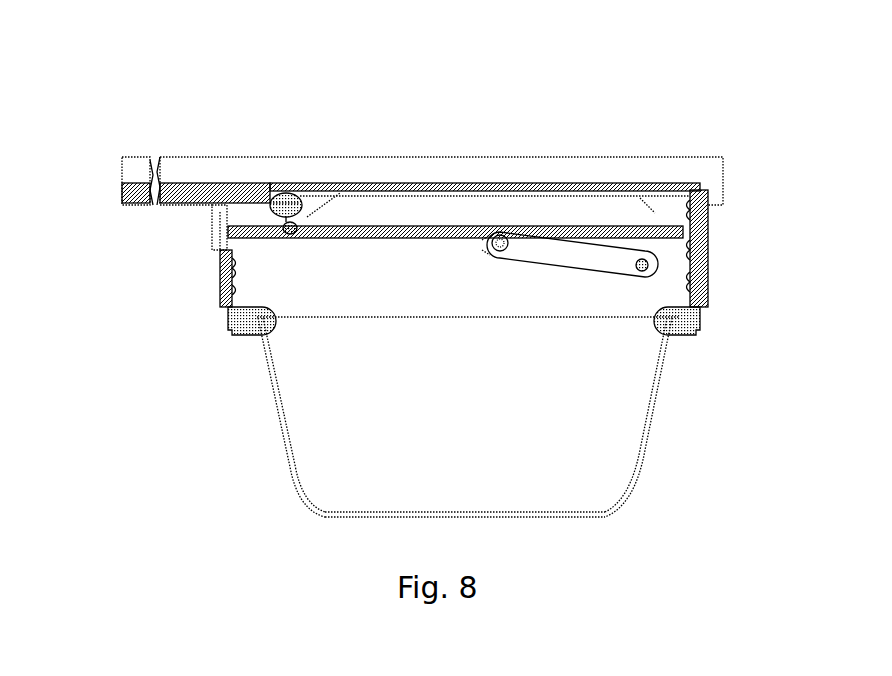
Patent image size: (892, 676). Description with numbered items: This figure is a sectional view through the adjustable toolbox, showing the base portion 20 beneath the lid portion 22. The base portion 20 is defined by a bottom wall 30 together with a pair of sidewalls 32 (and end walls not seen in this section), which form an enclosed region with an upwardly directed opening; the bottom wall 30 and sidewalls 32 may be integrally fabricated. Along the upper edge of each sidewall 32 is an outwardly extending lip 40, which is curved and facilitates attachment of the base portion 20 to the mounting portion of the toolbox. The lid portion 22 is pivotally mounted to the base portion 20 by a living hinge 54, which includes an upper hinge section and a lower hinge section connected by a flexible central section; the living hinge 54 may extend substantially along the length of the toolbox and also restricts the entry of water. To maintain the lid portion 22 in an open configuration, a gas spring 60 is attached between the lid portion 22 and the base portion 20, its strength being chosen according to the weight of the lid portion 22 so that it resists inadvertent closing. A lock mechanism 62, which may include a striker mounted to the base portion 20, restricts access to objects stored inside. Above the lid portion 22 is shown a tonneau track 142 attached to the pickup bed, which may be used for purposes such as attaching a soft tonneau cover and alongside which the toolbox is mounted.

The base portion 20 is at (460, 418).
The lid portion 22 is at (418, 168).
The bottom wall 30 is at (510, 513).
The sidewalls 32 is at (277, 405).
The outwardly extending lip 40 is at (677, 307).
The living hinge 54 is at (713, 241).
The gas spring 60 is at (552, 257).
The lock mechanism 62 is at (287, 193).
The tonneau track 142 is at (583, 168).